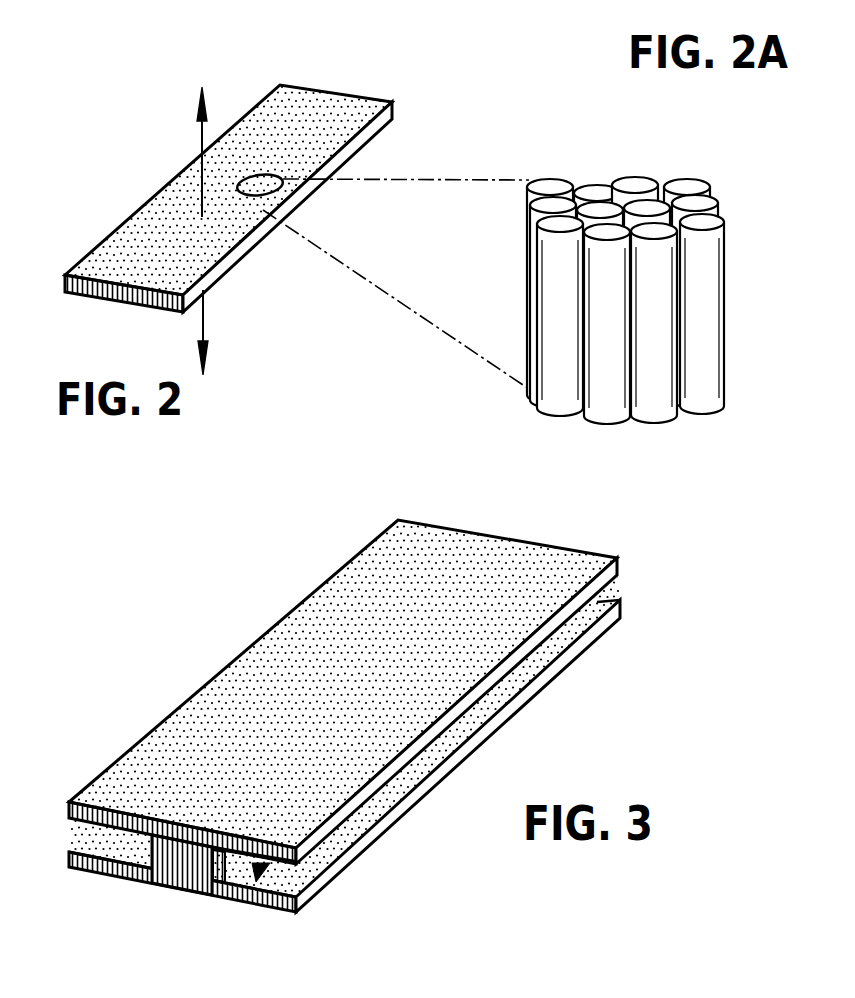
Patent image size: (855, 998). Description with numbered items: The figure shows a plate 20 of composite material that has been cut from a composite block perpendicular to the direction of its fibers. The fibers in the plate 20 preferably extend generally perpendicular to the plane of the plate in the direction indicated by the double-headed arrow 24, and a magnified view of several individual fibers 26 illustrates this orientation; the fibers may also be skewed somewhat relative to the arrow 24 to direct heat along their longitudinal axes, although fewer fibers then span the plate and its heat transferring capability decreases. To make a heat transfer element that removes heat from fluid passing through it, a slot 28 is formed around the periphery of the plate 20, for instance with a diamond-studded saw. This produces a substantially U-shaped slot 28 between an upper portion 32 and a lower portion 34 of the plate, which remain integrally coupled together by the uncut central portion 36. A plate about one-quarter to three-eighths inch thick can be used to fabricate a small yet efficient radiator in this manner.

In FIG. 2, the plate 20 is at (367, 105).
In FIG. 3, the plate 20 is at (396, 657).
In FIG. 2, the double-headed arrow 24 is at (202, 147).
In FIG. 2A, the individual fibers 26 is at (633, 176).
In FIG. 3, the slot 28 is at (241, 896).
In FIG. 3, the upper portion 32 is at (619, 564).
In FIG. 3, the lower portion 34 is at (622, 619).
In FIG. 3, the uncut central portion 36 is at (158, 885).